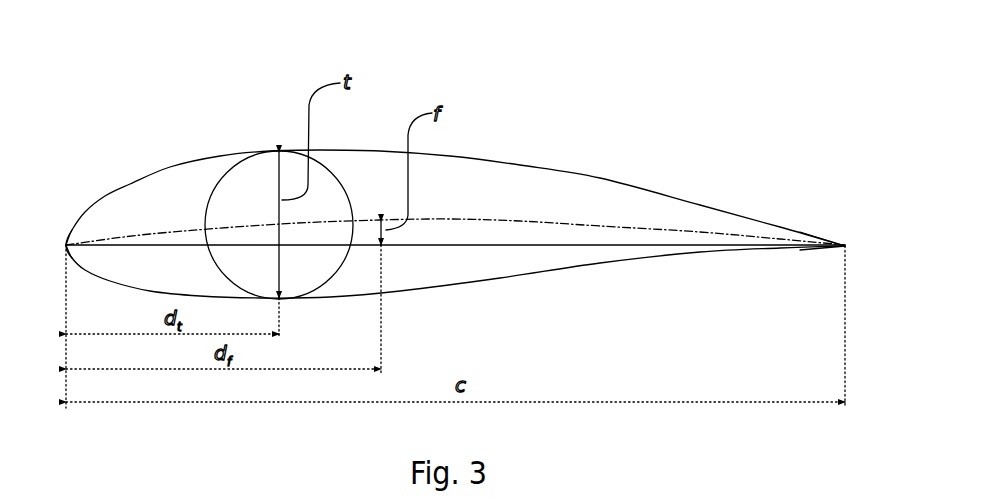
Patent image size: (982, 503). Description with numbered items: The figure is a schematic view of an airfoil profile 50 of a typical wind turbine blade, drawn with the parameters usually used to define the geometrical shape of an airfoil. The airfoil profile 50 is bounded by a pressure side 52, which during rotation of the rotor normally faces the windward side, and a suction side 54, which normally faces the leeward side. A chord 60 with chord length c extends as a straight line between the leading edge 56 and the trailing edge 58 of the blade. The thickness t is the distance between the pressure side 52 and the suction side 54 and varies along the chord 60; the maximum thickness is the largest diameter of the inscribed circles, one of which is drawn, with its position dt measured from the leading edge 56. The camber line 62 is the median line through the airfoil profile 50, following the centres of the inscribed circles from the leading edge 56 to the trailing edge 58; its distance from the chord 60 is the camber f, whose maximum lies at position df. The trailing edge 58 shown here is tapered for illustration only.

The airfoil profile 50 is at (439, 175).
The pressure side 52 is at (607, 264).
The suction side 54 is at (552, 168).
The leading edge 56 is at (66, 245).
The trailing edge 58 is at (845, 245).
The chord 60 is at (646, 243).
The camber line 62 is at (445, 219).